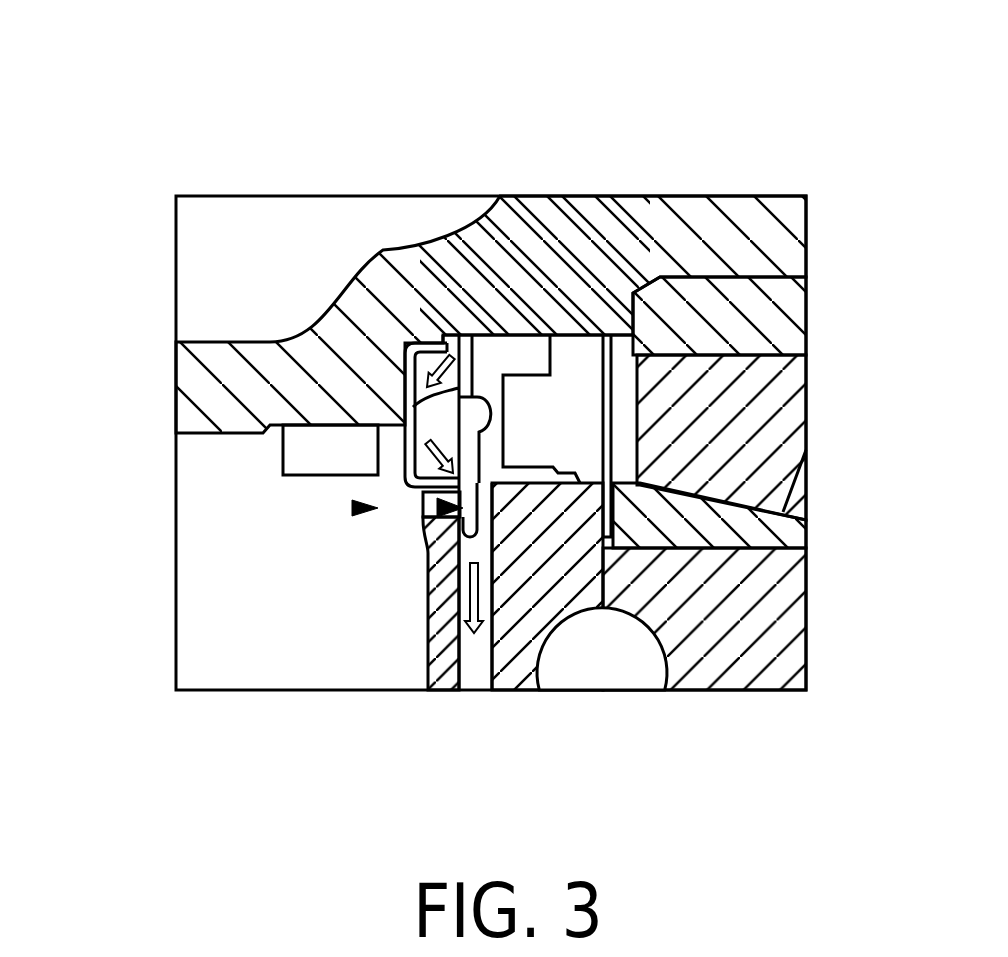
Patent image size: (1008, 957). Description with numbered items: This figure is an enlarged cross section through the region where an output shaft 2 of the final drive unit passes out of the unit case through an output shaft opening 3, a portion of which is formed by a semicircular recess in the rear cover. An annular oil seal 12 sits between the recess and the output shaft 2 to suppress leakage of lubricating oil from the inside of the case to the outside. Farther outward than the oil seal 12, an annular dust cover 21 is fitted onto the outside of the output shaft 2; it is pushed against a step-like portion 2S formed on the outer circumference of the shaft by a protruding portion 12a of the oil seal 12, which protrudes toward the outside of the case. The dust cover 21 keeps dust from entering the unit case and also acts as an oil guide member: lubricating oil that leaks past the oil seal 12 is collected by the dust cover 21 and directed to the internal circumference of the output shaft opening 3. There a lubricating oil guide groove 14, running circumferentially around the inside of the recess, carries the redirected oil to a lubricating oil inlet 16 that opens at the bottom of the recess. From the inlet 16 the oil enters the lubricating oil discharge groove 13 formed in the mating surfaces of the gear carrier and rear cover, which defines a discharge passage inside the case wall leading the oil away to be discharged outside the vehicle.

The output shaft 2 is at (724, 223).
The step-like portion 2S is at (408, 365).
The protruding portion 12a is at (458, 392).
The oil seal 12 is at (500, 418).
The dust cover 21 is at (408, 454).
The output shaft opening 3 is at (352, 507).
The lubricating oil inlet 16 is at (437, 507).
The lubricating oil discharge groove 13 is at (472, 670).
The lubricating oil guide groove 14 is at (470, 460).